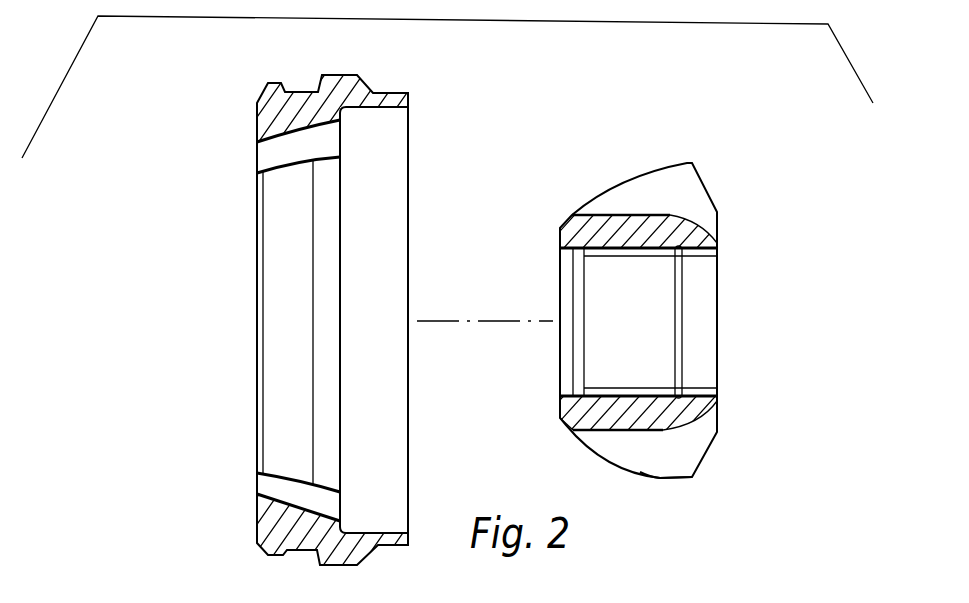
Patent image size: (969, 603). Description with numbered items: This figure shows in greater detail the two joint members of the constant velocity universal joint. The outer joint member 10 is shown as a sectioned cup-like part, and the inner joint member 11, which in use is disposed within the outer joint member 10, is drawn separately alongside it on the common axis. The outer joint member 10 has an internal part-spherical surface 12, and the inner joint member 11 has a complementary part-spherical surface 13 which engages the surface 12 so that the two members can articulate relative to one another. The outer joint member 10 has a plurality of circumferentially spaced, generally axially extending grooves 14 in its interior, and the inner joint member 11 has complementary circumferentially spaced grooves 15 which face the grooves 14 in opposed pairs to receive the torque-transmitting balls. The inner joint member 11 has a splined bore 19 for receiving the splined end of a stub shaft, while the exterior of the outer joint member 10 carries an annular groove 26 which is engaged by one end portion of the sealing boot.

The outer joint member 10 is at (367, 310).
The annular groove 26 is at (302, 92).
The internal part-spherical surface 12 is at (284, 472).
The grooves 14 is at (258, 496).
The inner joint member 11 is at (627, 336).
The splined bore 19 is at (707, 263).
The part-spherical surface 13 is at (653, 480).
The grooves 15 is at (690, 458).